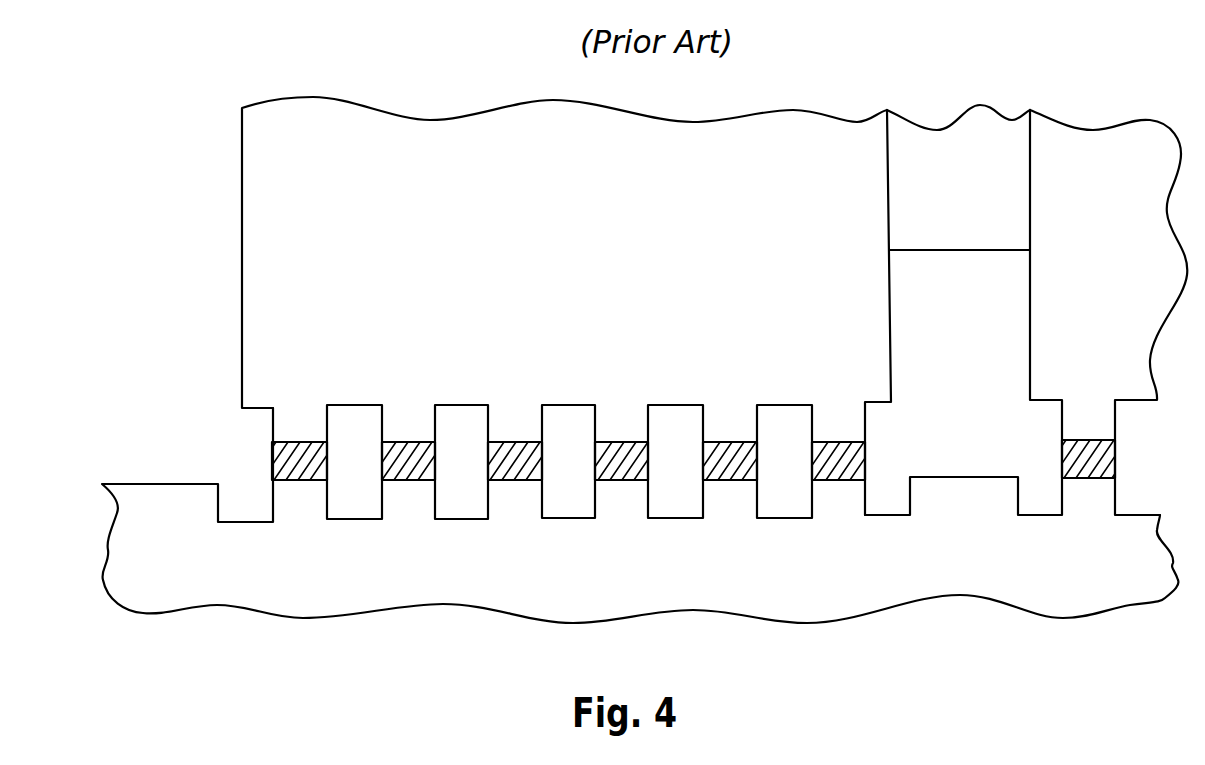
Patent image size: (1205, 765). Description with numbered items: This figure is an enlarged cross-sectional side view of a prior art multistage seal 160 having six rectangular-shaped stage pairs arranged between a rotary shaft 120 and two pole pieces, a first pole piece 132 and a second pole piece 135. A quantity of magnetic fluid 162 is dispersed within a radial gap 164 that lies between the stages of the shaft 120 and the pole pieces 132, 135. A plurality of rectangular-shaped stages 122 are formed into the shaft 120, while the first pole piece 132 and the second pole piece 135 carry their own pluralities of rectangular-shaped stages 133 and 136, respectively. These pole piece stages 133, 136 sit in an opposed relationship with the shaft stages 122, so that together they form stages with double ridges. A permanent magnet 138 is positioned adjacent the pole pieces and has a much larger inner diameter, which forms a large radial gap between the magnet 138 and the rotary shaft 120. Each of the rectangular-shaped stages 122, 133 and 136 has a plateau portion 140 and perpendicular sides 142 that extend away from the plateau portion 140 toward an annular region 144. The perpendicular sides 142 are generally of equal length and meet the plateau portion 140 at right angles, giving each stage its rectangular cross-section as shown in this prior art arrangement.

The multistage seal 160 is at (115, 149).
The first pole piece 132 is at (566, 306).
The permanent magnet 138 is at (963, 310).
The second pole piece 135 is at (1108, 312).
The rectangular-shaped stages of second pole piece 136 is at (1085, 418).
The magnetic fluid 162 is at (412, 445).
The rectangular-shaped stages of first pole piece 133 is at (623, 427).
The plateau portion 140 is at (737, 452).
The radial gap 164 is at (244, 457).
The shaft 120 is at (640, 515).
The rectangular-shaped stages of shaft 122 is at (303, 498).
The annular region 144 is at (565, 423).
The perpendicular sides 142 is at (705, 500).